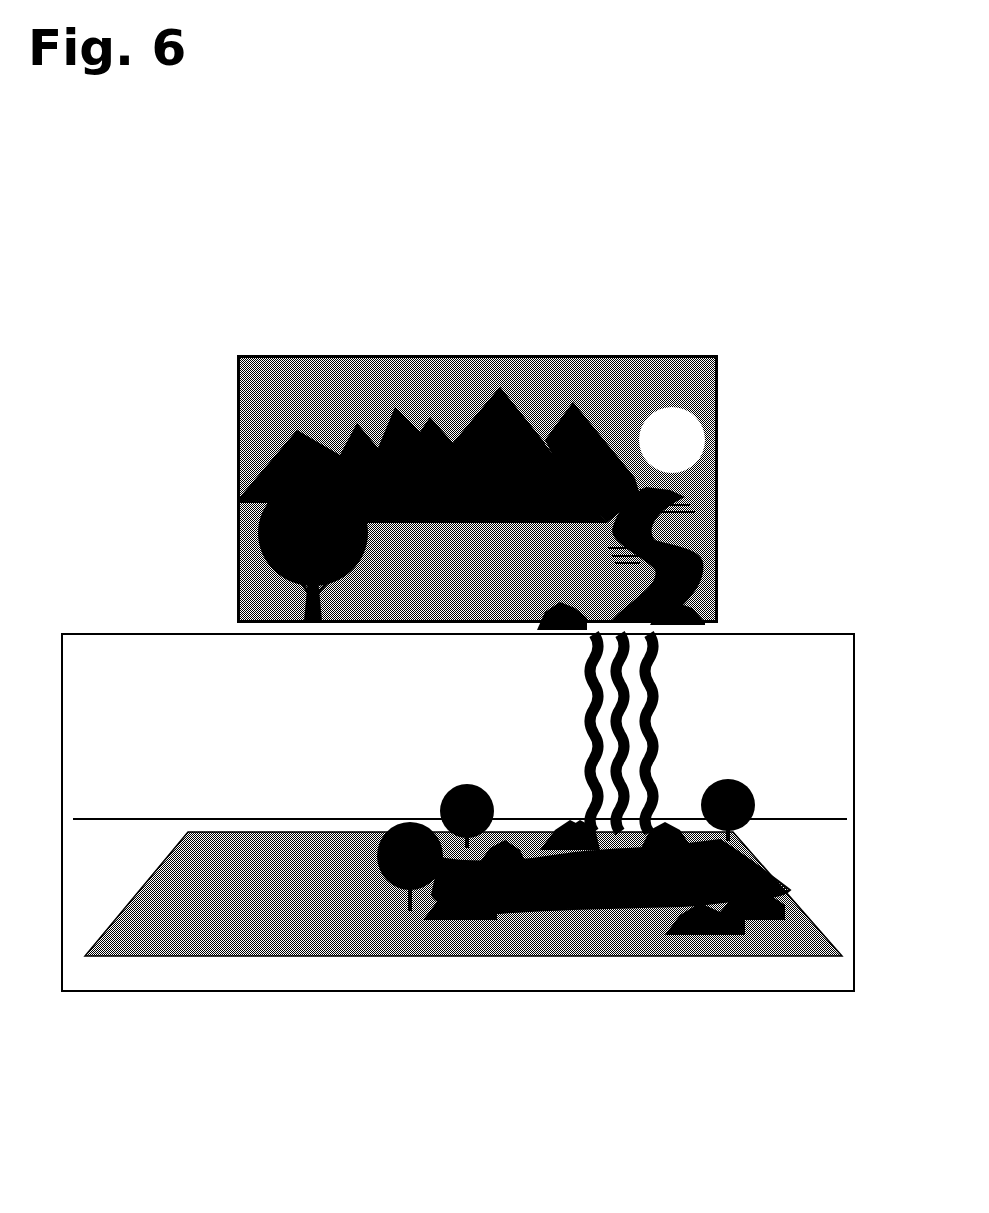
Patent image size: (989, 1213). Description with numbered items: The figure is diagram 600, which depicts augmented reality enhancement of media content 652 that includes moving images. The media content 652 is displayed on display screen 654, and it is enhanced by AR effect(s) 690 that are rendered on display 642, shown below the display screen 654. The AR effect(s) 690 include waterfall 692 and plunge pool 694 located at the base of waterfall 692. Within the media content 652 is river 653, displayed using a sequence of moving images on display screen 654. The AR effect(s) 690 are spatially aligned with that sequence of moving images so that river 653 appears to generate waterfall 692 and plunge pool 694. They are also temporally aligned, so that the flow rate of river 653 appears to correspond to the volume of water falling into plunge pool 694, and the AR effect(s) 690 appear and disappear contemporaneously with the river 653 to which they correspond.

The diagram 600 is at (798, 226).
The display screen 654 is at (455, 356).
The media content 652 is at (477, 494).
The river 653 is at (607, 583).
The display 642 is at (437, 992).
The AR effect(s) 690 is at (298, 747).
The waterfall 692 is at (585, 718).
The plunge pool 694 is at (611, 876).